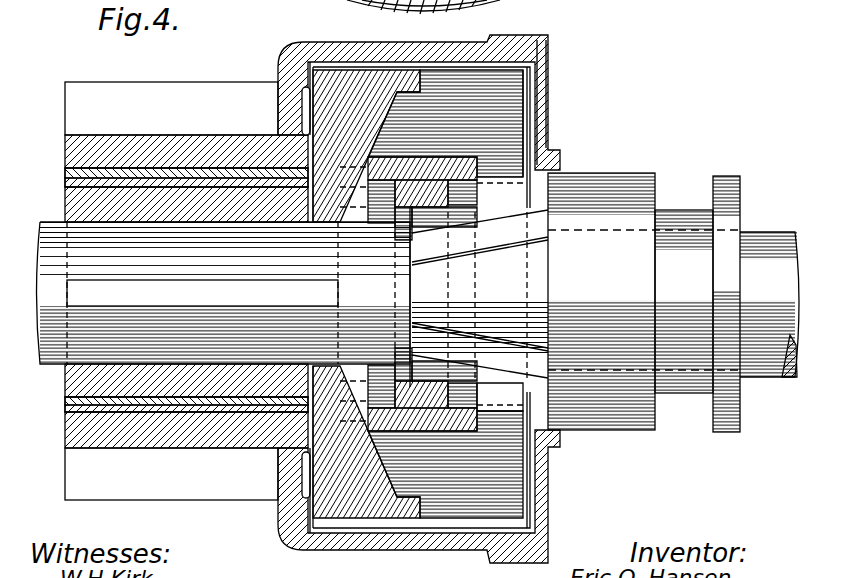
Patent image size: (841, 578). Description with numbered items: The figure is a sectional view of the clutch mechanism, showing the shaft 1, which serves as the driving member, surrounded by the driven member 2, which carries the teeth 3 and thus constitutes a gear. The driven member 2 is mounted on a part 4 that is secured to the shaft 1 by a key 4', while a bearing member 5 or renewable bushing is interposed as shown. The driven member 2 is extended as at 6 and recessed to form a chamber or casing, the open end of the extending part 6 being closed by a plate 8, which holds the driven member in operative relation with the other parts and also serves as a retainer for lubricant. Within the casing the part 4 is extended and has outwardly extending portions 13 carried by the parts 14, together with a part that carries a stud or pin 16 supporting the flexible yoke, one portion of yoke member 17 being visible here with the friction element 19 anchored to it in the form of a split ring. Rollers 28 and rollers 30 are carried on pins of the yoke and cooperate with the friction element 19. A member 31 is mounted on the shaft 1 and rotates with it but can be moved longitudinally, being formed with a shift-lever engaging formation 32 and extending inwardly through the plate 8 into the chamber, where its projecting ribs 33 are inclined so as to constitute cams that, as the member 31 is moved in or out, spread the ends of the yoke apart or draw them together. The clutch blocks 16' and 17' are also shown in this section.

The shaft 1 is at (761, 243).
The driven member 2 is at (80, 146).
The teeth 3 is at (142, 90).
The part 4 is at (173, 292).
The key 4' is at (224, 293).
The bearing member 5 is at (80, 174).
The extending part 6 is at (453, 50).
The plate 8 is at (540, 128).
The outwardly extending portions 13 is at (370, 86).
The parts 14 is at (320, 487).
The stud or pin 16 is at (422, 179).
The clutch block 16' is at (438, 171).
The portion of yoke member 17 is at (422, 418).
The clutch block 17' is at (436, 426).
The friction element 19 is at (510, 64).
The rollers 28 is at (510, 177).
The rollers 30 is at (498, 403).
The member 31 is at (612, 185).
The shift-lever engaging formation 32 is at (675, 208).
The projecting ribs 33 is at (428, 343).